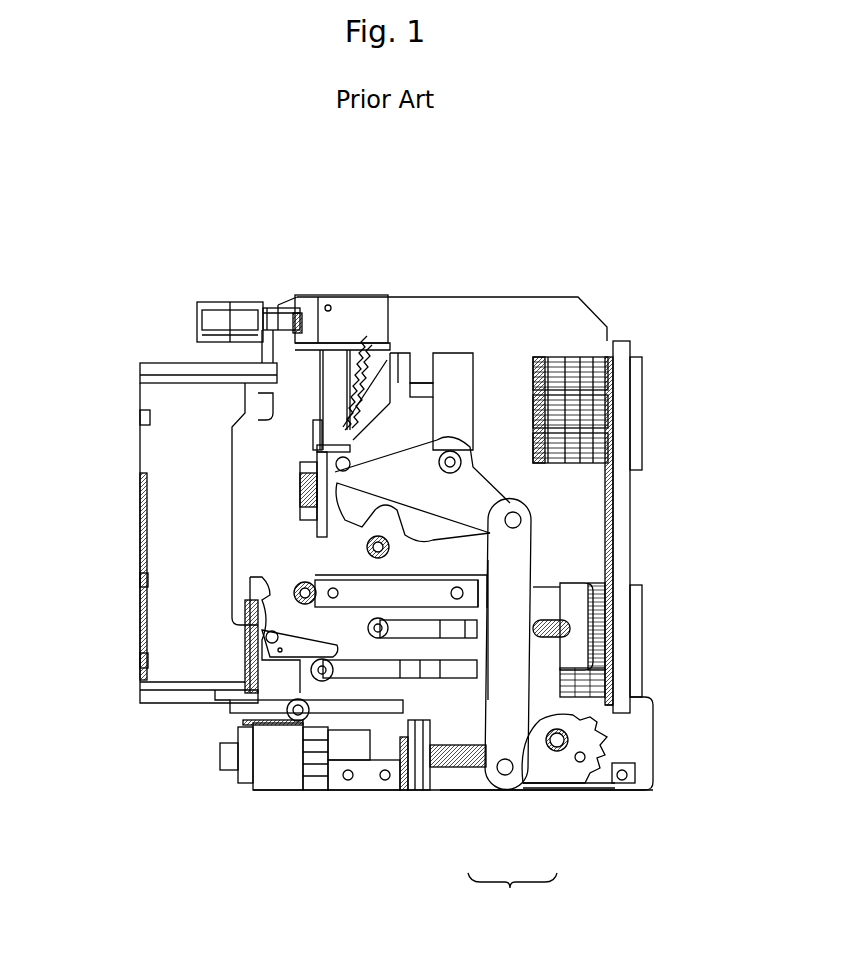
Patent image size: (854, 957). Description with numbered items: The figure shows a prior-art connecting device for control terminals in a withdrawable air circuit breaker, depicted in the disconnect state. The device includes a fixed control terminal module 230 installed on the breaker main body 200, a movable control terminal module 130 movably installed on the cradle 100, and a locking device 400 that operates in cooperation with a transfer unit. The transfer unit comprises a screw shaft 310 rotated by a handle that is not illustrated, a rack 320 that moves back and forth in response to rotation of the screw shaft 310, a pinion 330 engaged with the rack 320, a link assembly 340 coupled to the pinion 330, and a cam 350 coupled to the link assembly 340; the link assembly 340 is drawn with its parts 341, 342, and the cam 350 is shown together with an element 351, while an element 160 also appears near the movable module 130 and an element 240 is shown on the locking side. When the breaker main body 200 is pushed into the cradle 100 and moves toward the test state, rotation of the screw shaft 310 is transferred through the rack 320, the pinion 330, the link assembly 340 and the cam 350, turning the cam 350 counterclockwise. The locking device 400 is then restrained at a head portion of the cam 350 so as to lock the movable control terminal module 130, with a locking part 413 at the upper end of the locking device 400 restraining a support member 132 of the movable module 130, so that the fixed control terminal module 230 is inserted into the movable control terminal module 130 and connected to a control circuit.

The cradle 100 is at (603, 306).
The movable control terminal module 130 is at (290, 292).
The support member 132 is at (313, 300).
The arc extinguishing unit 160 is at (358, 345).
The breaker main body 200 is at (152, 355).
The fixed control terminal module 230 is at (218, 300).
The pivot shaft 240 is at (372, 543).
The screw shaft 310 is at (455, 772).
The rack 320 is at (582, 786).
The pinion 330 is at (610, 780).
The link assembly 340 is at (512, 895).
The gear 341 is at (543, 770).
The shaft 342 is at (492, 748).
The cam 350 is at (425, 487).
The link 351 is at (445, 545).
The locking device 400 is at (312, 409).
The locking part 413 is at (337, 367).